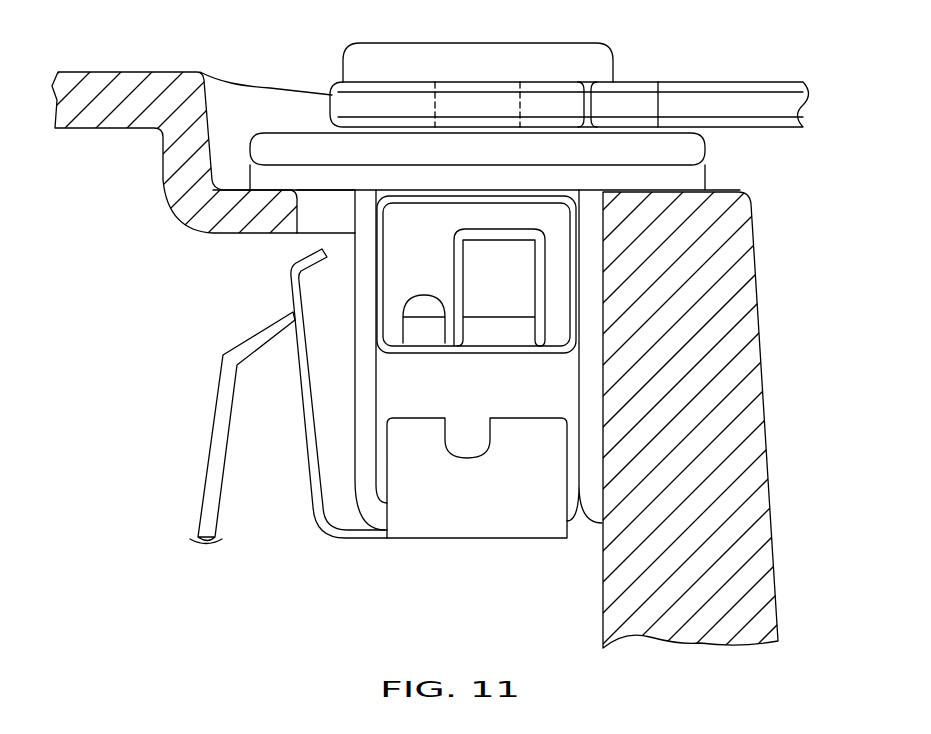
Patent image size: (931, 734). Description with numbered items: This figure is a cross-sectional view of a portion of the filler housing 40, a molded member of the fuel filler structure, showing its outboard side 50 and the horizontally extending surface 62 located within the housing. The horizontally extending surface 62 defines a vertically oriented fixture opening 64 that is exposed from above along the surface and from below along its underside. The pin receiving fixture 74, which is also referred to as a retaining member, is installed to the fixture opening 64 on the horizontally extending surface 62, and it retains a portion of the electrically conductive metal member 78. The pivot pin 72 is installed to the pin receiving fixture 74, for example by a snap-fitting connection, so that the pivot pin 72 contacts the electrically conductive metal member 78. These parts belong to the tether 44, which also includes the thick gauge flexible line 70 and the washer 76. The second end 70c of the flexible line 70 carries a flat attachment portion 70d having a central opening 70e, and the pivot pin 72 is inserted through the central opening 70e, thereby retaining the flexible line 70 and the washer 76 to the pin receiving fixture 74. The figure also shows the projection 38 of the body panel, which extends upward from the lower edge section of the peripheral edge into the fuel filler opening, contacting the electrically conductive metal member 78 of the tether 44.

The projection 38 is at (210, 427).
The filler housing 40 is at (118, 68).
The tether 44 is at (723, 79).
The outboard side 50 is at (228, 110).
The horizontally extending surface 62 is at (738, 190).
The fixture opening 64 is at (297, 217).
The thick gauge flexible line 70 is at (772, 103).
The second end 70c is at (590, 104).
The flat attachment portion 70d is at (345, 103).
The central opening 70e is at (520, 110).
The pivot pin 72 is at (403, 63).
The pin receiving fixture 74 is at (660, 180).
The washer 76 is at (683, 150).
The electrically conductive metal member 78 is at (310, 380).